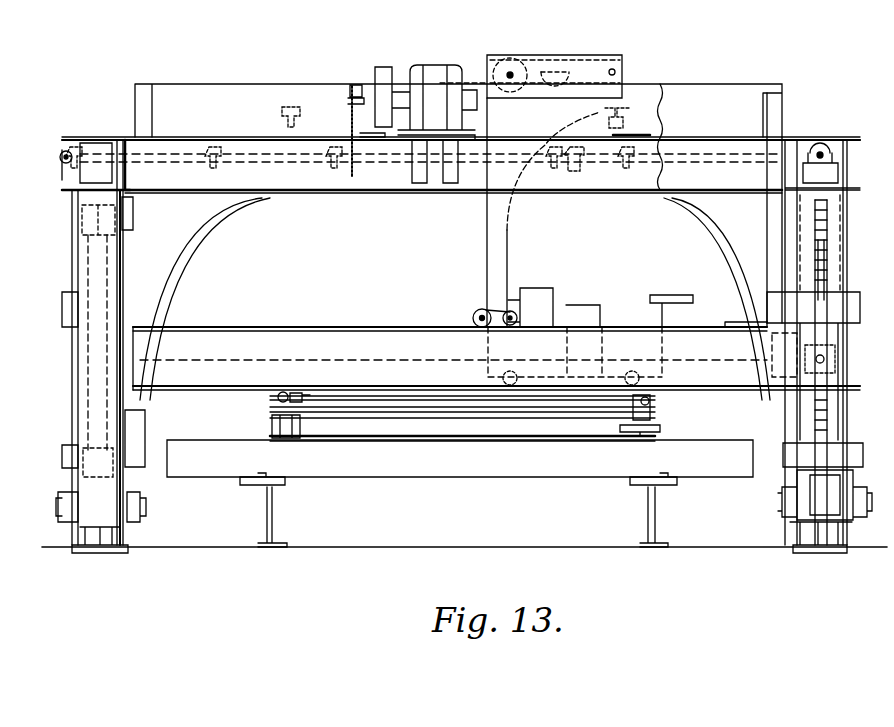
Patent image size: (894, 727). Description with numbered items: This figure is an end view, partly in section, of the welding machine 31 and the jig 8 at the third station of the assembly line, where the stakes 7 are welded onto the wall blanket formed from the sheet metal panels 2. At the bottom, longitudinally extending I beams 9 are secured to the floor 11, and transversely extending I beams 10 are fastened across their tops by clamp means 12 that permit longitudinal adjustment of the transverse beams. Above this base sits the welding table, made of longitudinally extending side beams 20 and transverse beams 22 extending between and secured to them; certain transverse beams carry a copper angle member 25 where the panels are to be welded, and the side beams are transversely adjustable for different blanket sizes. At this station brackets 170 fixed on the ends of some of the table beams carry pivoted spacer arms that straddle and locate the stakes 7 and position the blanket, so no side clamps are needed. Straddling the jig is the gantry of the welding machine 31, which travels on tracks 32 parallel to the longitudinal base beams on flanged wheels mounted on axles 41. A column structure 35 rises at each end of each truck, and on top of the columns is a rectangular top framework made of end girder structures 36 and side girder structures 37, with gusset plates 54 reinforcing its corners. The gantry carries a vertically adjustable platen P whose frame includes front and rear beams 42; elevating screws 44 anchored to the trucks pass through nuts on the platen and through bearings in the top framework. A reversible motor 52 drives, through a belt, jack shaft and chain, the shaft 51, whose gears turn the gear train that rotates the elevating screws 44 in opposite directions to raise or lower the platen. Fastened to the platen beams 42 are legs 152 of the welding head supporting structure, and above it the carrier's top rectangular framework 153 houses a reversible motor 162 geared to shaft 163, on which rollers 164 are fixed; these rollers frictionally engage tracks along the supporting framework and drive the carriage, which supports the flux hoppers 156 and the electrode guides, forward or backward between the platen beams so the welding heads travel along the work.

The sheet metal panels 2 is at (415, 405).
The stakes 7 is at (518, 405).
The jig 8 is at (259, 500).
The longitudinally extending I beams 9 is at (274, 513).
The transversely extending I beams 10 is at (503, 470).
The floor 11 is at (585, 548).
The clamp means 12 is at (242, 485).
The longitudinally extending side beams 20 is at (270, 421).
The transverse beams 22 is at (380, 436).
The angle member 25 is at (368, 413).
The welding machines 31 is at (215, 78).
The tracks 32 is at (110, 538).
The column structure 35 is at (76, 249).
The end girder structures 36 is at (643, 184).
The side girder structures 37 is at (62, 178).
The axles 41 is at (142, 502).
The front and rear beams 42 is at (413, 340).
The elevating screws 44 is at (827, 277).
The shaft 51 is at (393, 160).
The reversible motor 52 is at (435, 77).
The gusset plates 54 is at (352, 119).
The legs 152 is at (135, 105).
The top rectangular framework 153 is at (613, 64).
The flux hoppers 156 is at (548, 297).
The reversible motor 162 is at (562, 62).
The shaft 163 is at (511, 74).
The rollers 164 is at (622, 73).
The brackets 170 is at (270, 403).
The platen P is at (352, 338).